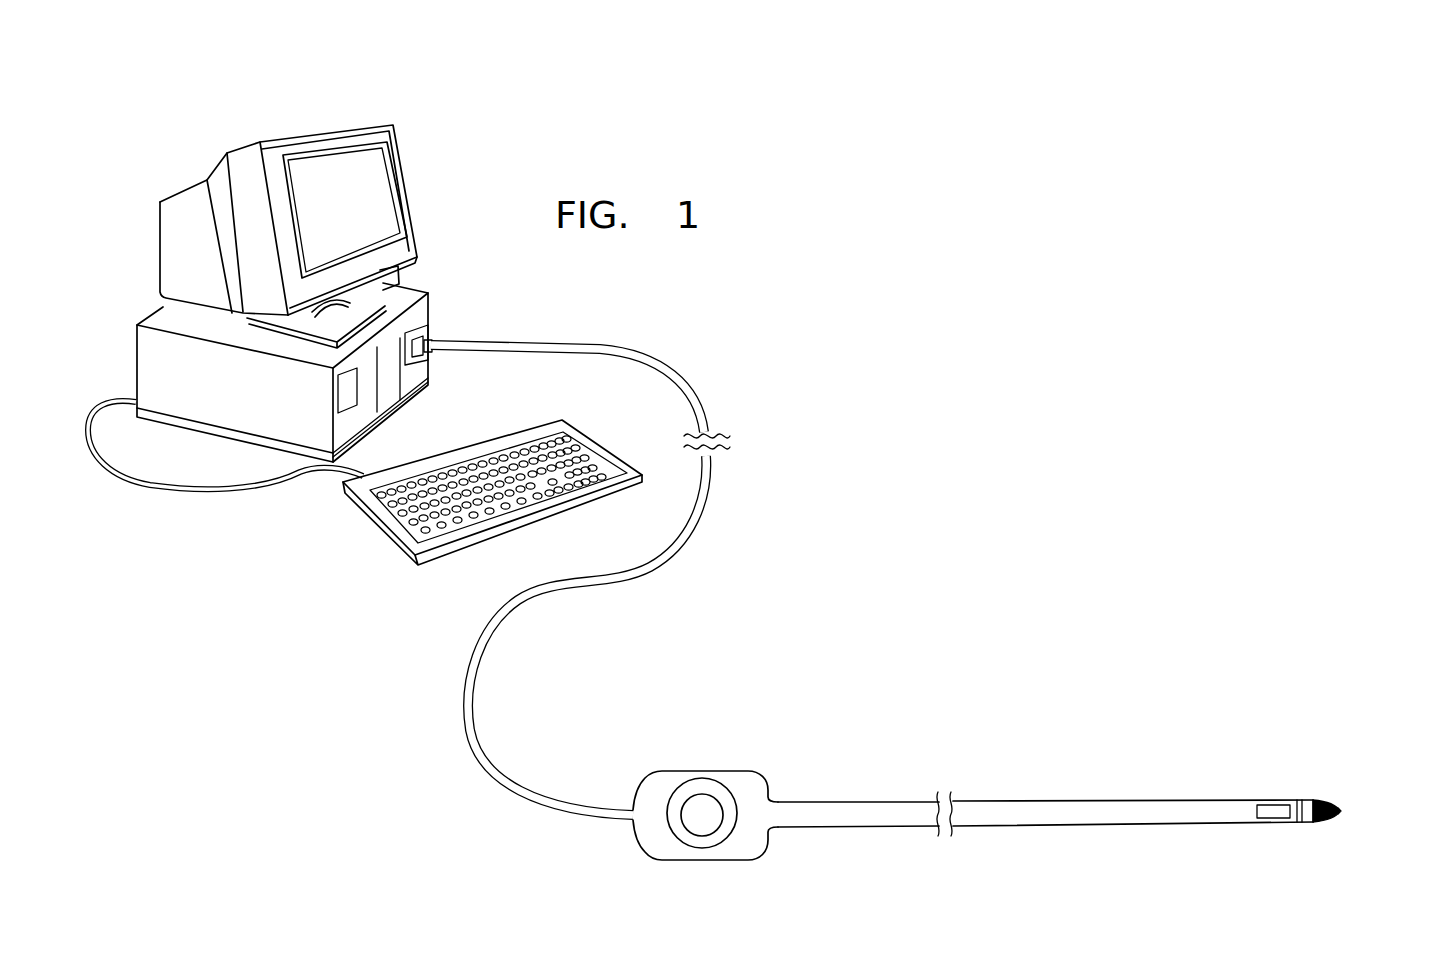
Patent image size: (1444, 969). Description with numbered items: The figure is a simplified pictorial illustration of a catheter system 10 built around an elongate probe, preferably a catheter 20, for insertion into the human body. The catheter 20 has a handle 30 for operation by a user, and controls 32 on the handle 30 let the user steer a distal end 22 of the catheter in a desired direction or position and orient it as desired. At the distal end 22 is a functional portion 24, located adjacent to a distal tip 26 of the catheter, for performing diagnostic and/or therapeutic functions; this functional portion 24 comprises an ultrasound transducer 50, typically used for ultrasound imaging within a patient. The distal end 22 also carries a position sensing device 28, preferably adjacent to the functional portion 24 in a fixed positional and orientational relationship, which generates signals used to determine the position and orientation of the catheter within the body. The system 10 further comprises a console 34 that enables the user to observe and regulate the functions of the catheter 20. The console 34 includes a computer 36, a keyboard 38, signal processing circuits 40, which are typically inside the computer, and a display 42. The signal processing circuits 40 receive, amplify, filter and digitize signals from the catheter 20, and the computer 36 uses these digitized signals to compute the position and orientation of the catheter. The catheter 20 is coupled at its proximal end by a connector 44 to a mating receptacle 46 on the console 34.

The catheter system 10 is at (946, 378).
The catheter 20 is at (843, 815).
The distal end 22 is at (1298, 762).
The functional portion 24 is at (1310, 822).
The distal tip 26 is at (1340, 813).
The position sensing device 28 is at (1270, 818).
The handle 30 is at (697, 860).
The controls 32 is at (727, 790).
The console 34 is at (175, 115).
The computer 36 is at (142, 350).
The keyboard 38 is at (563, 420).
The signal processing circuits 40 is at (203, 412).
The display 42 is at (413, 216).
The connector 44 is at (427, 350).
The mating receptacle 46 is at (428, 333).
The ultrasound transducer 50 is at (1323, 797).